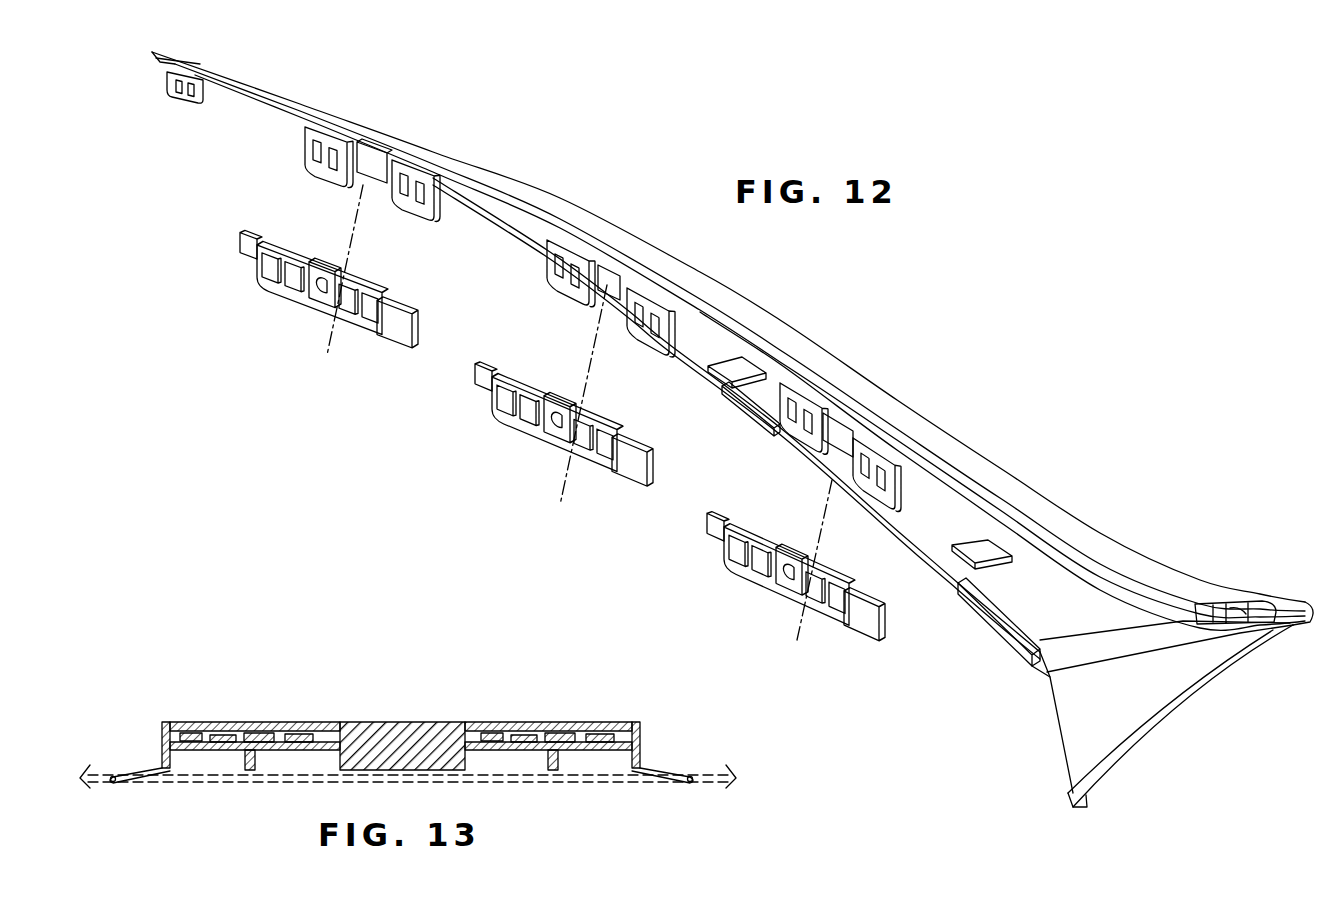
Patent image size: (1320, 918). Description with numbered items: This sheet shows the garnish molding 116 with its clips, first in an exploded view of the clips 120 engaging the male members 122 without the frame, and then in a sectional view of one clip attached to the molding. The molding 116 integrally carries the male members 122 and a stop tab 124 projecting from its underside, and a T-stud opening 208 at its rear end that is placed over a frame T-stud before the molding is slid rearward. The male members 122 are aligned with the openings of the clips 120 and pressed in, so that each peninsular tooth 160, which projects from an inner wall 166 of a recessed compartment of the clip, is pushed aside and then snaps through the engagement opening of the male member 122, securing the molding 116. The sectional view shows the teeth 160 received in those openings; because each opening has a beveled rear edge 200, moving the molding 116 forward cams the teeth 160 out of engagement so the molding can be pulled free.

In FIG. 12, the molding 116 is at (381, 92).
In FIG. 12, the clip 120 is at (288, 308).
In FIG. 13, the clip 120 is at (393, 722).
In FIG. 12, the male member 122 is at (870, 447).
In FIG. 13, the male member 122 is at (251, 732).
In FIG. 12, the stop tab 124 is at (604, 273).
In FIG. 13, the peninsular tooth 160 is at (210, 730).
In FIG. 13, the inner wall 166 is at (180, 722).
In FIG. 13, the beveled rear edge 200 is at (216, 732).
In FIG. 12, the T-stud opening 208 is at (1233, 604).